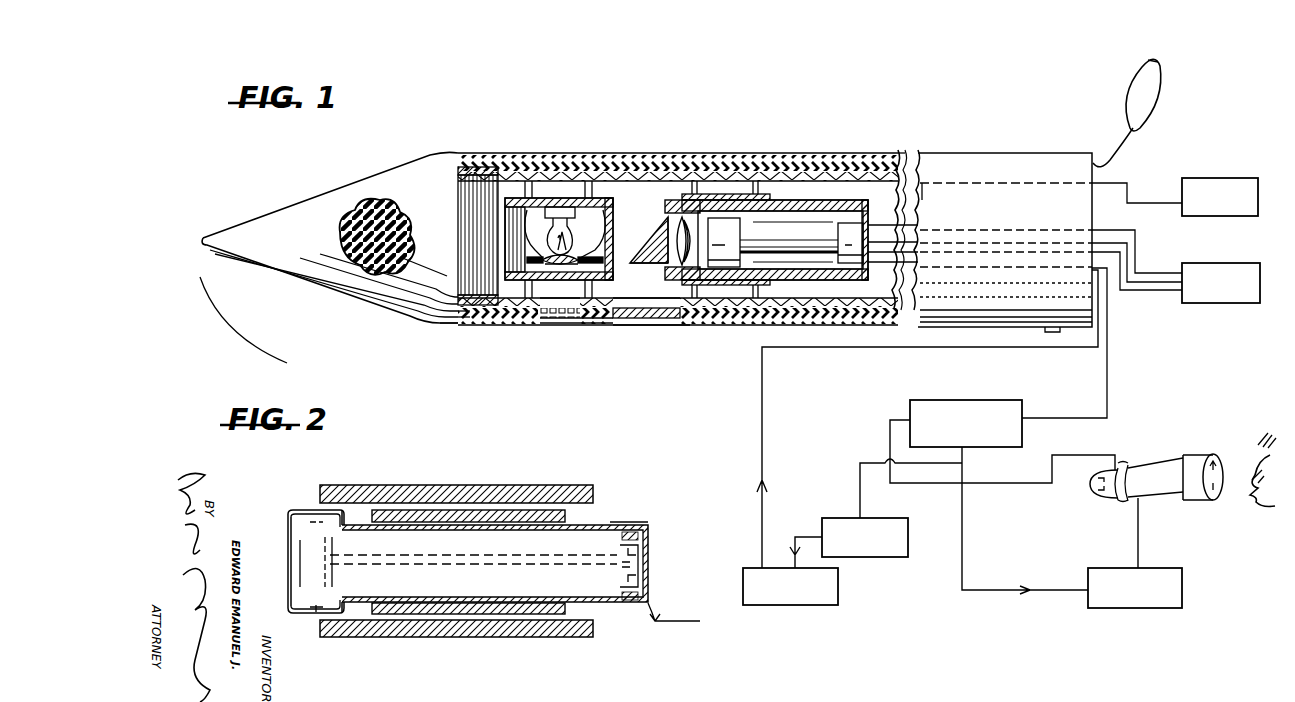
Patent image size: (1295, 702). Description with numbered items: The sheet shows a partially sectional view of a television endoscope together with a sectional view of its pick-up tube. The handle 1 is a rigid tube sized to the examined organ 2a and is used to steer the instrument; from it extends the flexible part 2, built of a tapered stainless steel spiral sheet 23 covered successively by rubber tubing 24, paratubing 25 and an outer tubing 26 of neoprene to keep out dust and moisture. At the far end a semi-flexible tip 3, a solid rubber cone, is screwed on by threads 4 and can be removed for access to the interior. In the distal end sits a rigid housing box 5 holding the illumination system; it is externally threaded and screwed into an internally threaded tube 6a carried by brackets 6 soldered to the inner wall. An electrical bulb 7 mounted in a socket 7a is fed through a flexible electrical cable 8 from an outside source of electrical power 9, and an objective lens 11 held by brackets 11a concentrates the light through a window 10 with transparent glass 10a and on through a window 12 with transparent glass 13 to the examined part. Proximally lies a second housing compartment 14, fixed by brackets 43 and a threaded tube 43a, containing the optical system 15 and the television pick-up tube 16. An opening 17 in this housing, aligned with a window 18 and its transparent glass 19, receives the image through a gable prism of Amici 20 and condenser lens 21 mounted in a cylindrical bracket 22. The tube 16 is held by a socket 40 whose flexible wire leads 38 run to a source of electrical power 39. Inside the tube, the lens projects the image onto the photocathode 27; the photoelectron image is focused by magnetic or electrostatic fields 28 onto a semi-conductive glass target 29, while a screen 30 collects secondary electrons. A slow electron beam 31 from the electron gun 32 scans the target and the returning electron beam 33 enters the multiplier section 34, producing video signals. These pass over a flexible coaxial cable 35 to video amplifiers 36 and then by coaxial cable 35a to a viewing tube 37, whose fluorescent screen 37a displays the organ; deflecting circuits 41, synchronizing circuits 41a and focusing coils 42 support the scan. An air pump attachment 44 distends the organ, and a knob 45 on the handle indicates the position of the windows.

In FIG. 1, the handle 1 is at (1005, 153).
In FIG. 1, the flexible part 2 is at (848, 155).
In FIG. 1, the examined organ 2a is at (250, 330).
In FIG. 1, the semi-flexible tip 3 is at (385, 300).
In FIG. 1, the threads 4 is at (480, 175).
In FIG. 1, the housing box 5 is at (622, 190).
In FIG. 1, the brackets 6 is at (518, 208).
In FIG. 1, the threaded tube 6a is at (522, 190).
In FIG. 1, the electrical bulb 7 is at (572, 226).
In FIG. 1, the socket 7a is at (562, 210).
In FIG. 1, the flexible electrical cable 8 is at (660, 182).
In FIG. 1, the source of electrical power 9 is at (1235, 178).
In FIG. 1, the window 10 is at (550, 290).
In FIG. 1, the transparent glass 10a is at (576, 244).
In FIG. 1, the objective lens 11 is at (560, 266).
In FIG. 1, the brackets 11a is at (544, 252).
In FIG. 1, the window 12 is at (560, 318).
In FIG. 1, the transparent glass 13 is at (572, 323).
In FIG. 1, the housing compartment 14 is at (864, 193).
In FIG. 1, the optical system 15 is at (663, 285).
In FIG. 1, the television pick-up tube 16 is at (797, 233).
In FIG. 2, the television pick-up tube 16 is at (622, 519).
In FIG. 1, the opening 17 is at (662, 222).
In FIG. 1, the window 18 is at (630, 318).
In FIG. 1, the transparent glass 19 is at (660, 324).
In FIG. 1, the gable prism of Amici 20 is at (647, 262).
In FIG. 1, the condenser lens 21 is at (695, 280).
In FIG. 1, the cylindrical bracket 22 is at (665, 206).
In FIG. 1, the stainless steel spiral sheet 23 is at (680, 200).
In FIG. 1, the rubber tubing 24 is at (458, 326).
In FIG. 1, the paratubing 25 is at (464, 320).
In FIG. 1, the outer tubing 26 is at (474, 325).
In FIG. 2, the photocathode 27 is at (300, 572).
In FIG. 2, the magnetic or electrostatic fields 28 is at (312, 615).
In FIG. 2, the semi-conductive glass target 29 is at (345, 528).
In FIG. 2, the screen 30 is at (328, 522).
In FIG. 2, the slow electron beam 31 is at (527, 563).
In FIG. 2, the electron gun 32 is at (640, 555).
In FIG. 2, the returning electron beam 33 is at (533, 557).
In FIG. 2, the multiplier section 34 is at (648, 532).
In FIG. 1, the flexible coaxial cable 35 is at (1108, 380).
In FIG. 2, the flexible coaxial cable 35 is at (675, 620).
In FIG. 1, the coaxial cable 35a is at (1005, 480).
In FIG. 1, the video amplifiers 36 is at (990, 400).
In FIG. 1, the viewing tube 37 is at (1200, 498).
In FIG. 1, the fluorescent screen 37a is at (1250, 448).
In FIG. 1, the flexible wire leads 38 is at (1168, 285).
In FIG. 1, the source of electrical power 39 is at (1235, 263).
In FIG. 1, the socket 40 is at (922, 190).
In FIG. 1, the deflecting circuits 41 is at (800, 605).
In FIG. 2, the deflecting circuits 41 is at (440, 510).
In FIG. 1, the synchronizing circuits 41a is at (875, 557).
In FIG. 2, the focusing coils 42 is at (500, 486).
In FIG. 1, the brackets 43 is at (698, 194).
In FIG. 1, the tube 43a is at (712, 195).
In FIG. 1, the air pump attachment 44 is at (1163, 90).
In FIG. 1, the knob 45 is at (1040, 330).